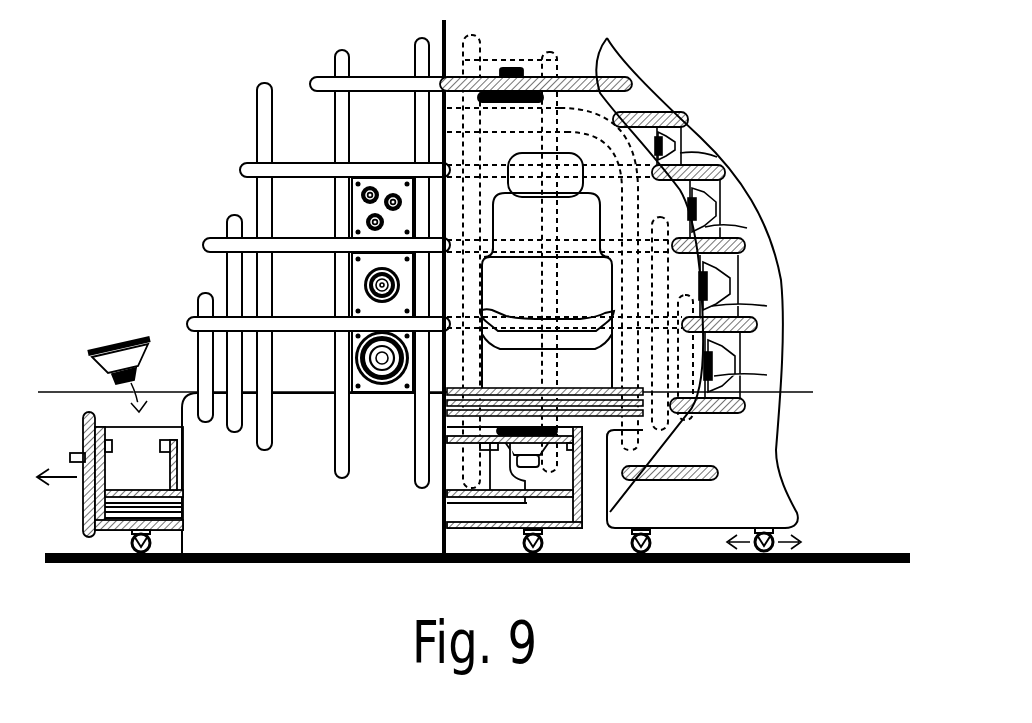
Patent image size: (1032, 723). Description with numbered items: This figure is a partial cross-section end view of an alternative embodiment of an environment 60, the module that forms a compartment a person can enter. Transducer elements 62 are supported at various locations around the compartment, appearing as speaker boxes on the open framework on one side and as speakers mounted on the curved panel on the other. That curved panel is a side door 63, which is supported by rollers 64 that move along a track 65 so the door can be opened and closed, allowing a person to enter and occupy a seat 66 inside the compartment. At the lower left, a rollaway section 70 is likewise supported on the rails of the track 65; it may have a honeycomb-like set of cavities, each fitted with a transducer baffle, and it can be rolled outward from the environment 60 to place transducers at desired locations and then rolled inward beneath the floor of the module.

The environment 60 is at (250, 43).
The transducer elements 62 is at (386, 186).
The side door 63 is at (763, 498).
The rollers 64 is at (765, 562).
The track 65 is at (868, 565).
The seat 66 is at (567, 213).
The rollaway section 70 is at (104, 545).